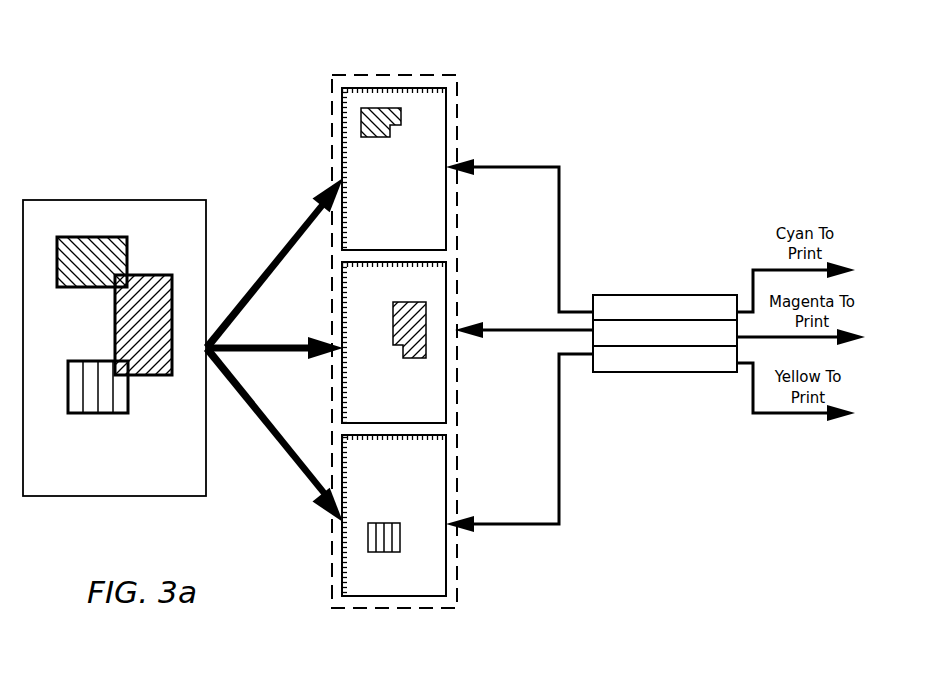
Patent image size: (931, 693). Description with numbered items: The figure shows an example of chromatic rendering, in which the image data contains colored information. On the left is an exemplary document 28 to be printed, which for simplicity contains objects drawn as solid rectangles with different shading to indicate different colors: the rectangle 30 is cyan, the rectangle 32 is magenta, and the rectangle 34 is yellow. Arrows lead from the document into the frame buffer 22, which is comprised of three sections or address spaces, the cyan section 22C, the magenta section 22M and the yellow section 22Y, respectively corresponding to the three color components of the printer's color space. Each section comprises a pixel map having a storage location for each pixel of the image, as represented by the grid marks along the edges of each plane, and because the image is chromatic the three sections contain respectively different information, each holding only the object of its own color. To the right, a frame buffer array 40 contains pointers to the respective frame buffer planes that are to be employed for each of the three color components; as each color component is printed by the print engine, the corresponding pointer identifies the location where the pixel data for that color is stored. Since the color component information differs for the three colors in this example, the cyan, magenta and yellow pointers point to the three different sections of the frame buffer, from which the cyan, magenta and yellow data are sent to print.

The frame buffer 22 is at (343, 75).
The cyan section of frame buffer 22C is at (434, 150).
The magenta section of frame buffer 22M is at (434, 327).
The yellow section of frame buffer 22Y is at (433, 510).
The document 28 is at (140, 200).
The cyan rectangle 30 is at (103, 247).
The magenta rectangle 32 is at (150, 285).
The yellow rectangle 34 is at (80, 363).
The frame buffer array 40 is at (655, 295).